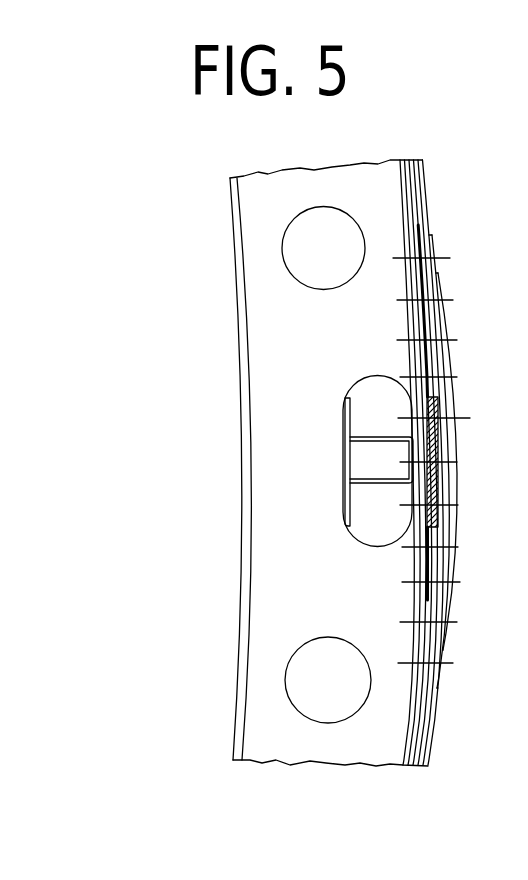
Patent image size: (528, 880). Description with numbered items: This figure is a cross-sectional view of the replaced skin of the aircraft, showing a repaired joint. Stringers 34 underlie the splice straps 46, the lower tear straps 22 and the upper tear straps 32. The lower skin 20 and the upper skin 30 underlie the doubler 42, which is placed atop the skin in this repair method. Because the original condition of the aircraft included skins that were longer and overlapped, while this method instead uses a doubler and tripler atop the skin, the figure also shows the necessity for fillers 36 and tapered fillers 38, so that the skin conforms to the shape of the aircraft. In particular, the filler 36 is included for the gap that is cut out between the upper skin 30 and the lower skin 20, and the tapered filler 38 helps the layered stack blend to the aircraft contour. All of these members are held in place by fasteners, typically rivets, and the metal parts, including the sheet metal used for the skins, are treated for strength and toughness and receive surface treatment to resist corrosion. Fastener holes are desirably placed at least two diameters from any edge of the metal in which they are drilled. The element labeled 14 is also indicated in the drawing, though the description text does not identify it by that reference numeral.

The printed circuit board 14 is at (451, 610).
The lower skin 20 is at (434, 703).
The lower tear strap 22 is at (426, 733).
The upper skin 30 is at (428, 220).
The upper tear strap 32 is at (419, 181).
The stringer 34 is at (347, 527).
The filler 36 is at (441, 428).
The tapered filler 38 is at (433, 355).
The doubler 42 is at (438, 268).
The splice strap 46 is at (410, 320).